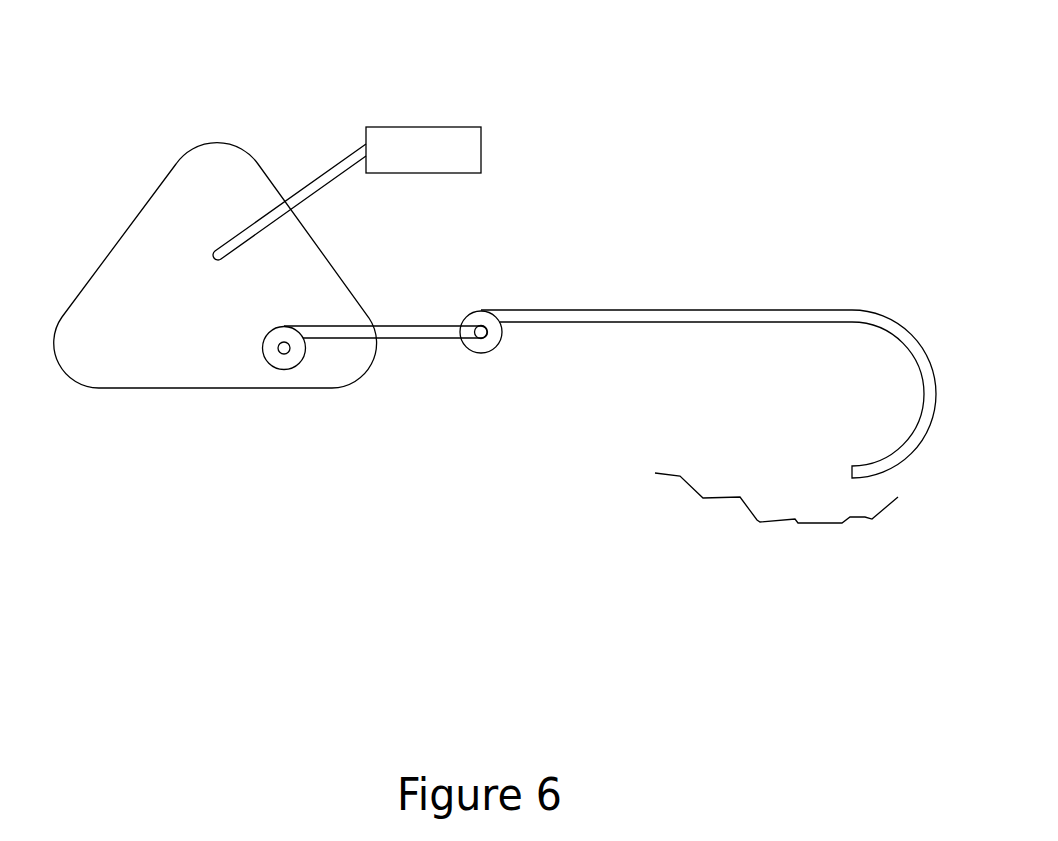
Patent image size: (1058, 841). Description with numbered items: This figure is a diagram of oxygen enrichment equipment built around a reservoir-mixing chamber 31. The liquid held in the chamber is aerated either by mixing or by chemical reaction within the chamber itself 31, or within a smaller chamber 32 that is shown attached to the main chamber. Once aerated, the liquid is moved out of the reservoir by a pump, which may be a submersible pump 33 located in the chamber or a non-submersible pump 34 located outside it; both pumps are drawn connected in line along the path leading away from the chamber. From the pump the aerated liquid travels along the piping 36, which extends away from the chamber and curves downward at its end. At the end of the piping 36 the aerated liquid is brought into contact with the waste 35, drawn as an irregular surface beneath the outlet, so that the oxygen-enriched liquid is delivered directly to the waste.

The reservoir-mixing chamber 31 is at (217, 137).
The smaller chamber 32 is at (483, 148).
The submersible pump 33 is at (282, 372).
The non-submersible pump 34 is at (475, 355).
The waste 35 is at (690, 493).
The piping 36 is at (842, 465).